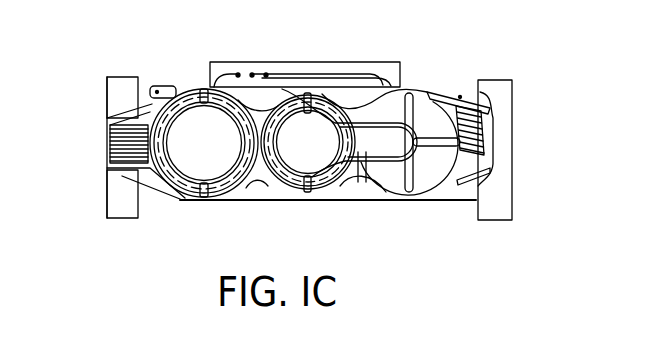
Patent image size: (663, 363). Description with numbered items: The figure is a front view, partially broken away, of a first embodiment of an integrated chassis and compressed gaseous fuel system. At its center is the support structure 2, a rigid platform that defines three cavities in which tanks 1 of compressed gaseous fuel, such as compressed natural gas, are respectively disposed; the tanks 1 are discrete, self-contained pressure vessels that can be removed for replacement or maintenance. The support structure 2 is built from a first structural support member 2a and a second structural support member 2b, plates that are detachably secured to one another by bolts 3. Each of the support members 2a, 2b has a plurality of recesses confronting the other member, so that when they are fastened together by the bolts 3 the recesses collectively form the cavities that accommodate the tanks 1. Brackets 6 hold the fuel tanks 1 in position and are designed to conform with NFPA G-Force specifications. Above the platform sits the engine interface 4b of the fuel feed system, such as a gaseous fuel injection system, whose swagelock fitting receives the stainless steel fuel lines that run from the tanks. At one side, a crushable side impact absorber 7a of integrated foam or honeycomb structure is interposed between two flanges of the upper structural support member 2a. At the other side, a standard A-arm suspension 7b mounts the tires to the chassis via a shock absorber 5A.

The tank of compressed gaseous fuel 1 is at (177, 96).
The support structure 2 is at (431, 201).
The first structural support member 2a is at (166, 197).
The second structural support member 2b is at (145, 111).
The bolts 3 is at (361, 185).
The engine interface 4b is at (287, 60).
The shock absorber 5A is at (480, 134).
The brackets 6 is at (205, 92).
The crushable side impact absorber 7a is at (110, 146).
The A-arm suspension 7b is at (469, 90).